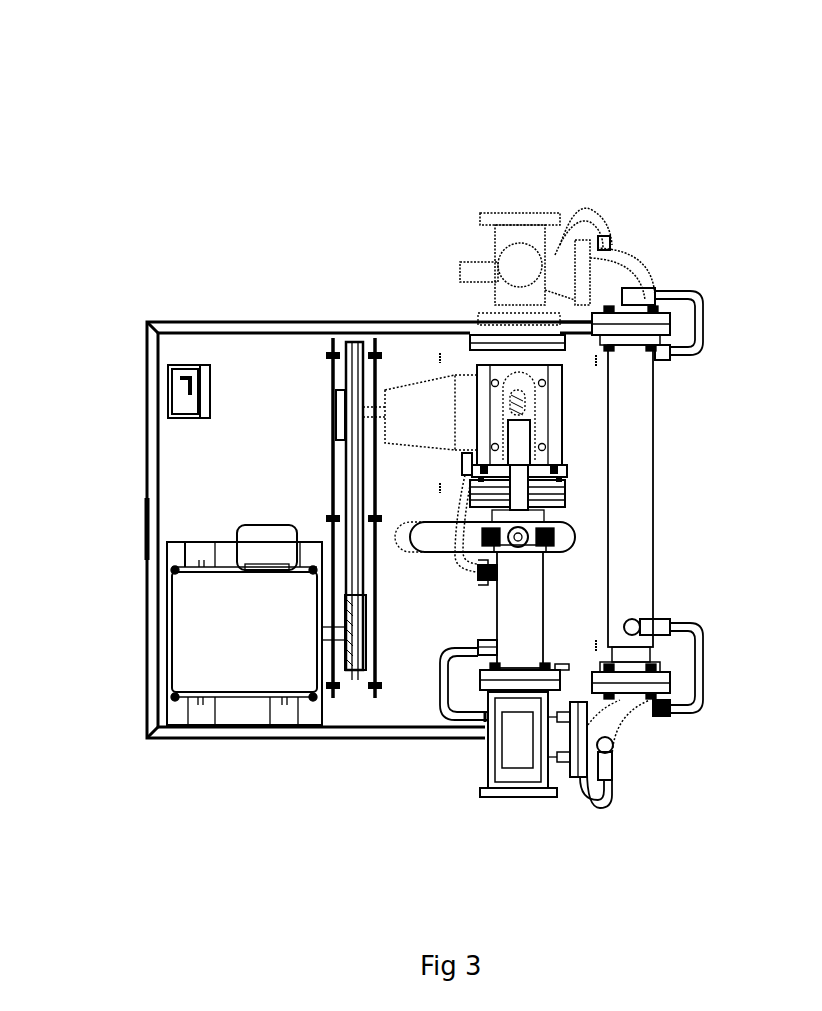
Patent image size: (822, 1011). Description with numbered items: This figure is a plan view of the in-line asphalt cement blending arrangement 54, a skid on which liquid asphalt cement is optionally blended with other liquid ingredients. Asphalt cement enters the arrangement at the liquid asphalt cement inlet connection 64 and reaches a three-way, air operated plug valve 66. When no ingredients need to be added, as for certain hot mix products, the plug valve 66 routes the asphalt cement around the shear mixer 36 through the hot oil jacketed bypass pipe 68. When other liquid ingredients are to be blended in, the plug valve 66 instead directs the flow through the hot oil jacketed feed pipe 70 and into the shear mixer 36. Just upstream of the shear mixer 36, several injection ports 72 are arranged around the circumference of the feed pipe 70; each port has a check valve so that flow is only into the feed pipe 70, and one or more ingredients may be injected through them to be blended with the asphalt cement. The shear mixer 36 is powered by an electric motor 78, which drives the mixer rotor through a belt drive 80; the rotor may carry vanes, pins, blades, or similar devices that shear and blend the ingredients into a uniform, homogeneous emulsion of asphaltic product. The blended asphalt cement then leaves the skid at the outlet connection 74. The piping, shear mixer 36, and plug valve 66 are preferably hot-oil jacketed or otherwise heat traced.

The in-line asphalt cement blending arrangement 54 is at (624, 104).
The outlet connection 74 is at (526, 206).
The shear mixer 36 is at (548, 398).
The injection ports 72 is at (560, 524).
The hot oil jacketed bypass pipe 68 is at (660, 512).
The hot oil jacketed feed pipe 70 is at (512, 600).
The belt drive 80 is at (333, 500).
The electric motor 78 is at (198, 642).
The plug valve 66 is at (510, 748).
The liquid asphalt cement inlet connection 64 is at (523, 797).